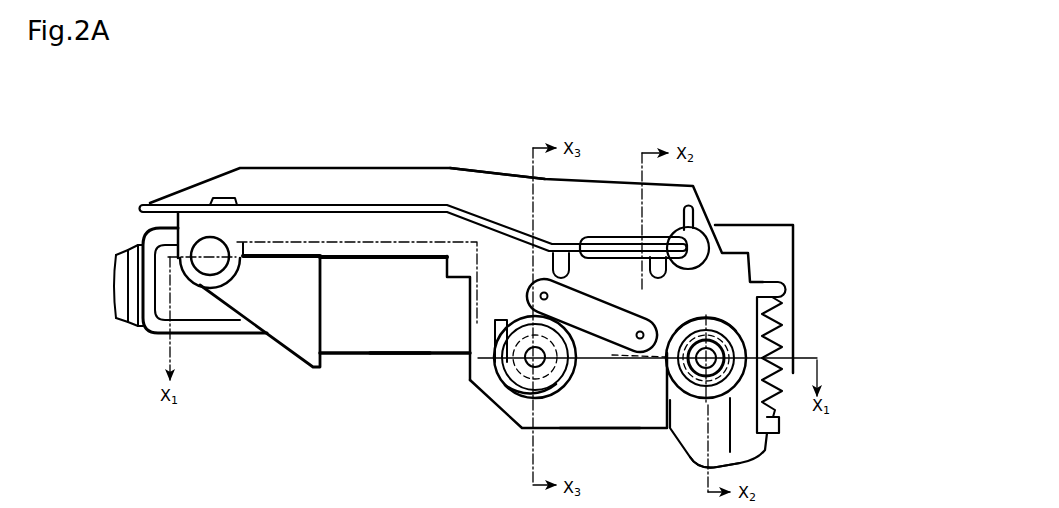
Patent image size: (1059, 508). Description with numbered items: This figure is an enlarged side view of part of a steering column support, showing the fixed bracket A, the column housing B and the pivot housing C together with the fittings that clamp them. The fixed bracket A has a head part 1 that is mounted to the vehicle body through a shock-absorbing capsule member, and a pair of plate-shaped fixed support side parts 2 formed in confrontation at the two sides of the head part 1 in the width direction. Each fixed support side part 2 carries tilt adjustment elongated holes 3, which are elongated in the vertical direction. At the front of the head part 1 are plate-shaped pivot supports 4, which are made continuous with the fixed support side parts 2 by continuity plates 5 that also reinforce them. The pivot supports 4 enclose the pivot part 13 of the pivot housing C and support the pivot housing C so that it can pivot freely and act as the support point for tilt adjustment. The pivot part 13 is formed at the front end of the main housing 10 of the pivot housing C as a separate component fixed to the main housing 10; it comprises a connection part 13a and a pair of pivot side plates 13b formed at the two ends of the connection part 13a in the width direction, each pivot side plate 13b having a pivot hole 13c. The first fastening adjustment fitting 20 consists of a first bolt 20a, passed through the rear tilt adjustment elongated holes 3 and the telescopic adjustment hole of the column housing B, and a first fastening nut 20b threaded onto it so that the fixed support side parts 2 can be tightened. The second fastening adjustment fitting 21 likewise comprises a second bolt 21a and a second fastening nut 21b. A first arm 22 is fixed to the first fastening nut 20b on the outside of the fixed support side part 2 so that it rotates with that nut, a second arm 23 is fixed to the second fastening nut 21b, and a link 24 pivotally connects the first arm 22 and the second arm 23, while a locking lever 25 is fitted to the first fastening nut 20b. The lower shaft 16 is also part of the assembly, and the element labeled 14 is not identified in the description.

The head part 1 is at (362, 167).
The fixed support side parts 2 is at (641, 405).
The tilt adjustment elongated holes 3 is at (509, 390).
The pivot supports 4 is at (211, 231).
The continuity plates 5 is at (408, 227).
The main housing 10 is at (367, 356).
The pivot part 13 is at (290, 352).
The connection part 13a is at (321, 287).
The pivot side plates 13b is at (302, 325).
The pivot holes 13c is at (231, 288).
The pin 14 is at (220, 241).
The lower shaft 16 is at (122, 327).
The first fastening adjustment fitting 20 is at (693, 370).
The first bolt 20a is at (702, 327).
The first fastening nut 20b is at (766, 456).
The second fastening adjustment fitting 21 is at (518, 364).
The second bolt 21a is at (528, 332).
The second fastening nut 21b is at (563, 379).
The first arm 22 is at (624, 353).
The second arm 23 is at (496, 334).
The link 24 is at (606, 322).
The locking lever 25 is at (693, 458).
The fixed bracket A is at (434, 165).
The column housing B is at (626, 432).
The pivot housing C is at (417, 364).